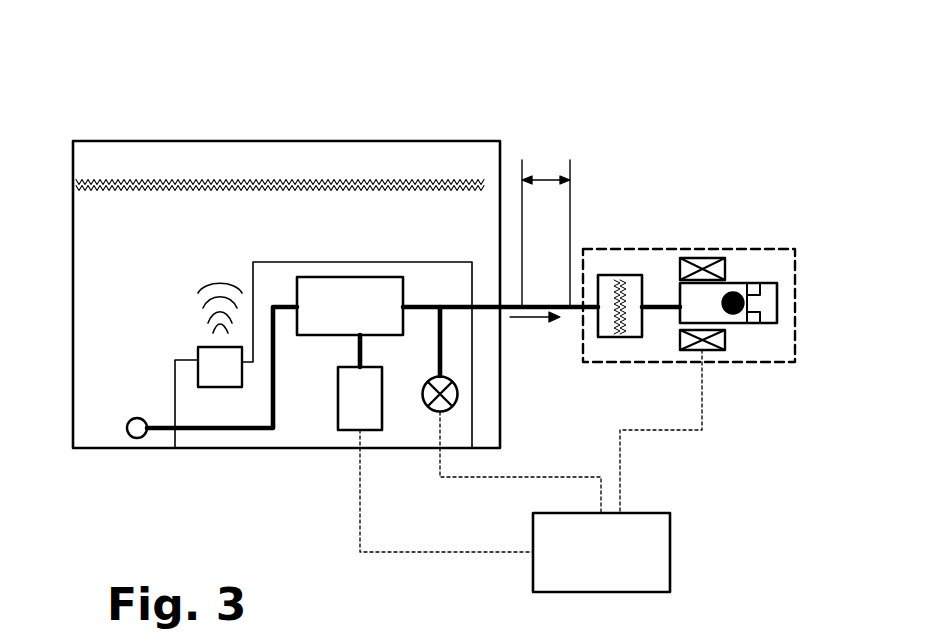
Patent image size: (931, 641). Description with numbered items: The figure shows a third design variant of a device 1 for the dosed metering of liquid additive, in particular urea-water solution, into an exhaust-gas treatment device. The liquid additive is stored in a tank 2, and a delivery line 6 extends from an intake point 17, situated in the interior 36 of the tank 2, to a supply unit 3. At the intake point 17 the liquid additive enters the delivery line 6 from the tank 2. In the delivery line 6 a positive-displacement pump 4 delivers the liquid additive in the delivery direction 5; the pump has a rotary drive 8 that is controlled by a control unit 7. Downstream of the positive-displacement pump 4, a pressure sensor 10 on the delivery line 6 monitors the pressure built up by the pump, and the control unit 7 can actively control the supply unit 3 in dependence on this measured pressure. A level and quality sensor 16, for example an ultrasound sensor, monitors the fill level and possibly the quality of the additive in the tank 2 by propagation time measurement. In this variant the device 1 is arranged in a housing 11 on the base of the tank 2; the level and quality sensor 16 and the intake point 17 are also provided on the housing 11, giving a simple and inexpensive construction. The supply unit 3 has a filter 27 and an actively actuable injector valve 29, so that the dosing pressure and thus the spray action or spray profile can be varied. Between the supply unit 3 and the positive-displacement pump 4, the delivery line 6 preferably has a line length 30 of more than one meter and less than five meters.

The device 1 is at (117, 74).
The tank 2 is at (69, 148).
The supply unit 3 is at (738, 362).
The positive-displacement pump 4 is at (350, 277).
The delivery direction 5 is at (535, 317).
The delivery line 6 is at (282, 306).
The control unit 7 is at (670, 513).
The rotary drive 8 is at (347, 430).
The pressure sensor 10 is at (427, 403).
The housing 11 is at (175, 362).
The level and quality sensor 16 is at (198, 382).
The intake point 17 is at (135, 438).
The filter 27 is at (615, 275).
The injector valve 29 is at (735, 283).
The line length 30 is at (545, 177).
The interior 36 is at (290, 163).